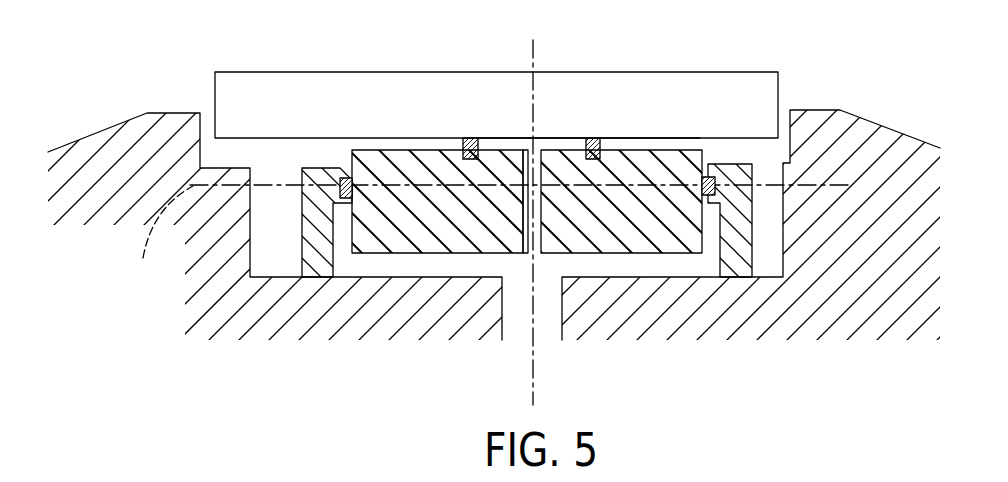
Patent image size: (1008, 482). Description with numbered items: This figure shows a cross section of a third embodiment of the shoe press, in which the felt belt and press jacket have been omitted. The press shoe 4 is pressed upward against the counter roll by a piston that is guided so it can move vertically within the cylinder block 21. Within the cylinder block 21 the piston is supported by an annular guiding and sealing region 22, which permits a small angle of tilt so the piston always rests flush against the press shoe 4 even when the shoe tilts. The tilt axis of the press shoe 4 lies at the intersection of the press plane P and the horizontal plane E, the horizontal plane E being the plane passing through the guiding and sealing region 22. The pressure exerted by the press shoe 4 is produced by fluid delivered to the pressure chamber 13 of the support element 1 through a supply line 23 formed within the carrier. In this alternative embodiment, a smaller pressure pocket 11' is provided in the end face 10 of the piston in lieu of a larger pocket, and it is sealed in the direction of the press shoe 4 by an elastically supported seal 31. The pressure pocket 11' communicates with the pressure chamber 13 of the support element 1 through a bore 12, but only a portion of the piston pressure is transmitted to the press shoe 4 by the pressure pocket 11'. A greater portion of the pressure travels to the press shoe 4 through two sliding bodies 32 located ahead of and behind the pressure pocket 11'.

The support element 1 is at (601, 231).
The press shoe 4 is at (745, 88).
The end face 10 is at (673, 140).
The pressure pocket 11' is at (532, 83).
The bore 12 is at (526, 253).
The pressure chamber 13 is at (405, 267).
The cylinder block 21 is at (744, 254).
The guiding and sealing region 22 is at (708, 186).
The supply line 23 is at (552, 310).
The elastically supported seal 31 is at (593, 137).
The sliding bodies 32 is at (437, 138).
The press plane P is at (530, 40).
The horizontal plane E is at (162, 236).